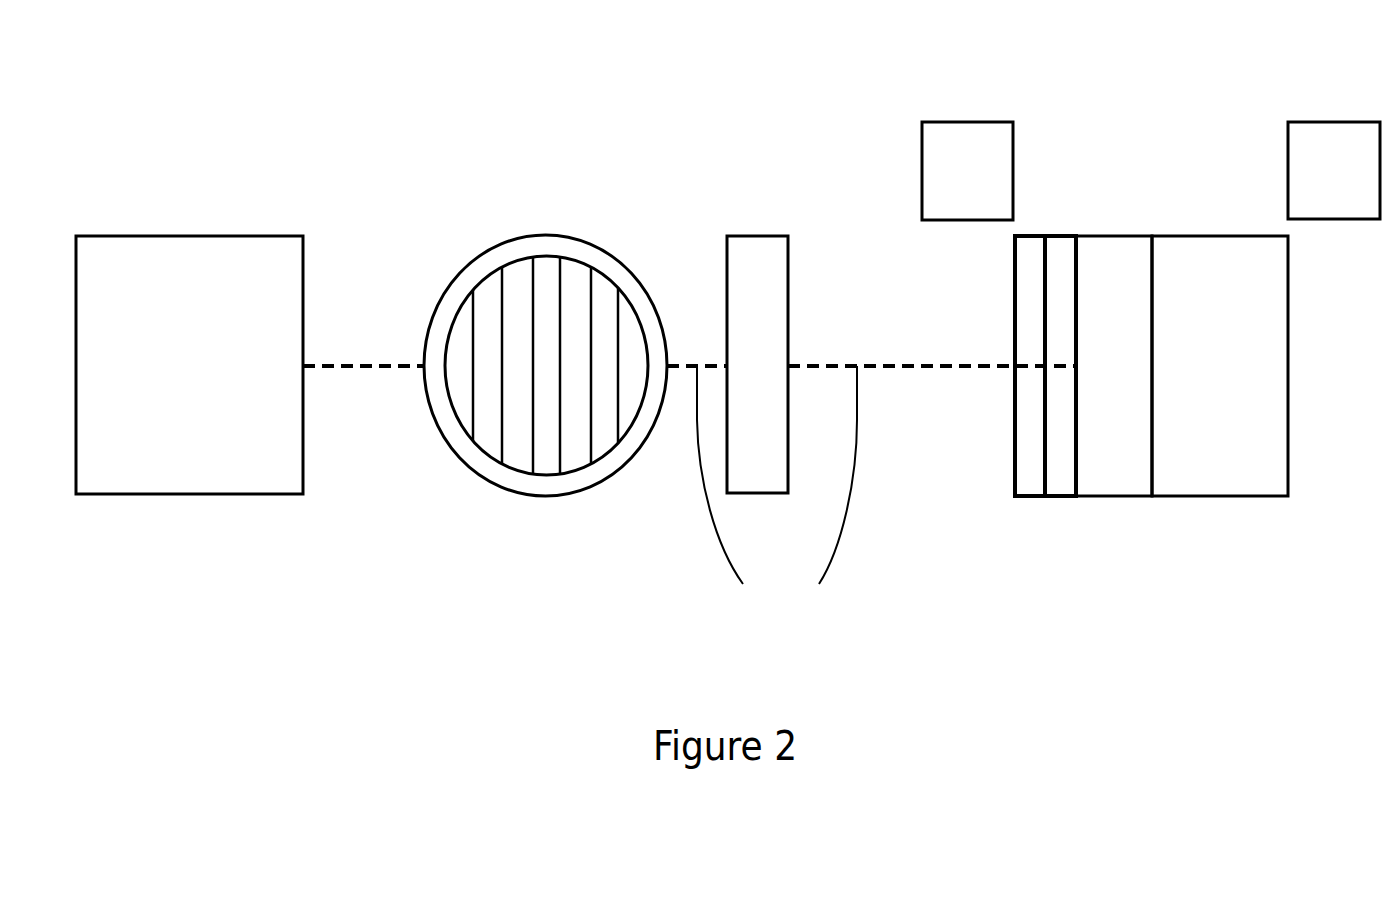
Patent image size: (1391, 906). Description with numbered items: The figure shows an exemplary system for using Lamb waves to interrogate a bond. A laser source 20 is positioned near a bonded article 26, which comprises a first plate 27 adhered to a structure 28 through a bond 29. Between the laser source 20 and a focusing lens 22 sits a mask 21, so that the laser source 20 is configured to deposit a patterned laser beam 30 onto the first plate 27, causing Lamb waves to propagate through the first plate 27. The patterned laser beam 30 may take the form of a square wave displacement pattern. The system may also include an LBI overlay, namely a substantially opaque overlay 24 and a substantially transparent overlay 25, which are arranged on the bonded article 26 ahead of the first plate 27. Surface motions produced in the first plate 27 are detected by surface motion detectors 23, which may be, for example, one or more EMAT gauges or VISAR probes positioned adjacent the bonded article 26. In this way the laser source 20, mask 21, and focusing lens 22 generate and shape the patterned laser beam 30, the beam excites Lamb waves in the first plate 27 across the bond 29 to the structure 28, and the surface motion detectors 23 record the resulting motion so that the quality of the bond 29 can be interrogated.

The laser source 20 is at (188, 234).
The mask 21 is at (500, 240).
The focusing lens 22 is at (757, 233).
The surface motion detector 23 is at (940, 120).
The substantially opaque overlay 24 is at (1060, 496).
The substantially transparent overlay 25 is at (1030, 496).
The bonded article 26 is at (1098, 188).
The first plate 27 is at (1113, 496).
The structure 28 is at (1205, 494).
The bond 29 is at (1152, 236).
The patterned laser beam 30 is at (777, 481).